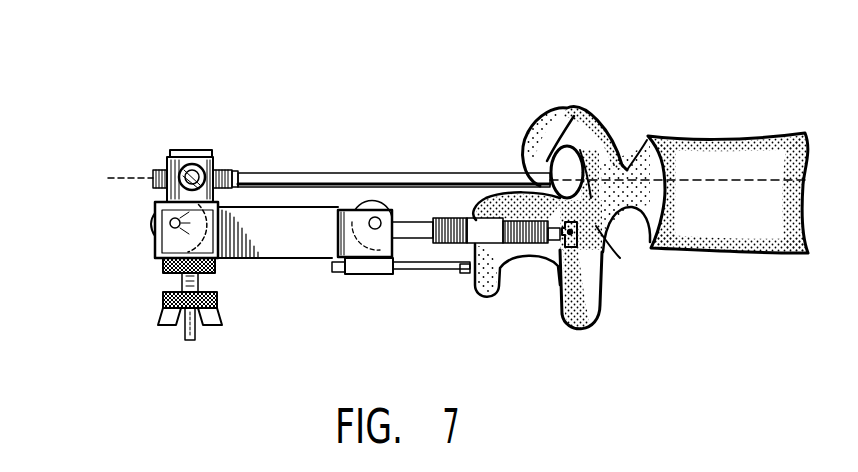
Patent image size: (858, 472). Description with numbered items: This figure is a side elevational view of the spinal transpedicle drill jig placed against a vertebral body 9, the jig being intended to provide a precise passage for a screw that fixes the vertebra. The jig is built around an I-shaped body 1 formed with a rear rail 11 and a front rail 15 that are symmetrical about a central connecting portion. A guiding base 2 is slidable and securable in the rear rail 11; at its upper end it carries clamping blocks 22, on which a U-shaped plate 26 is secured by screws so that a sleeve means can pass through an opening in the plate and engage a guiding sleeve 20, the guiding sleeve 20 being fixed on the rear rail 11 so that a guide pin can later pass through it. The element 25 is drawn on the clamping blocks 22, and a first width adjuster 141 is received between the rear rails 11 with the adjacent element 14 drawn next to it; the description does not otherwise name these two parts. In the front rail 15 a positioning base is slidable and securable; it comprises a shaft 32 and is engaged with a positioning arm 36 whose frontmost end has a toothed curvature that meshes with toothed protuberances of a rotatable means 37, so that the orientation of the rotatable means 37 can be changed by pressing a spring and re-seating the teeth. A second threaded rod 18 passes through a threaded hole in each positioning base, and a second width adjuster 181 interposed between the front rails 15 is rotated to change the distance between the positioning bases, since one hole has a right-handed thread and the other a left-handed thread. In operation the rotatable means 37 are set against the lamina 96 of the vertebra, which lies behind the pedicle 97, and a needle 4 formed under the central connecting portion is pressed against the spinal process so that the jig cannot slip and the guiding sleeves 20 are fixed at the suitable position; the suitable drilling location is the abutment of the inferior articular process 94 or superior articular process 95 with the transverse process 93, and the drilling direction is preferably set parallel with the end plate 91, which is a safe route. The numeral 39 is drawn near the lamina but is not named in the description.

The I-shaped body 1 is at (272, 258).
The guiding base 2 is at (219, 256).
The needle 4 is at (448, 271).
The vertebral body 9 is at (658, 210).
The rear rail 11 is at (156, 259).
The clamp block 14 is at (148, 217).
The first width adjuster 141 is at (151, 231).
The front rail 15 is at (338, 229).
The second threaded rod 18 is at (377, 218).
The second width adjuster 181 is at (394, 222).
The guiding sleeve 20 is at (428, 173).
The clamping block 22 is at (208, 157).
The bore 25 is at (190, 169).
The U-shaped plate 26 is at (216, 158).
The shaft 32 is at (420, 241).
The positioning arm 36 is at (506, 272).
The rotatable means 37 is at (158, 170).
The lamina 39 is at (597, 228).
The end plate 91 is at (718, 138).
The transverse process 93 is at (598, 117).
The inferior articular process 94 is at (583, 334).
The superior articular process 95 is at (570, 108).
The lamina 96 is at (560, 300).
The pedicle 97 is at (636, 166).